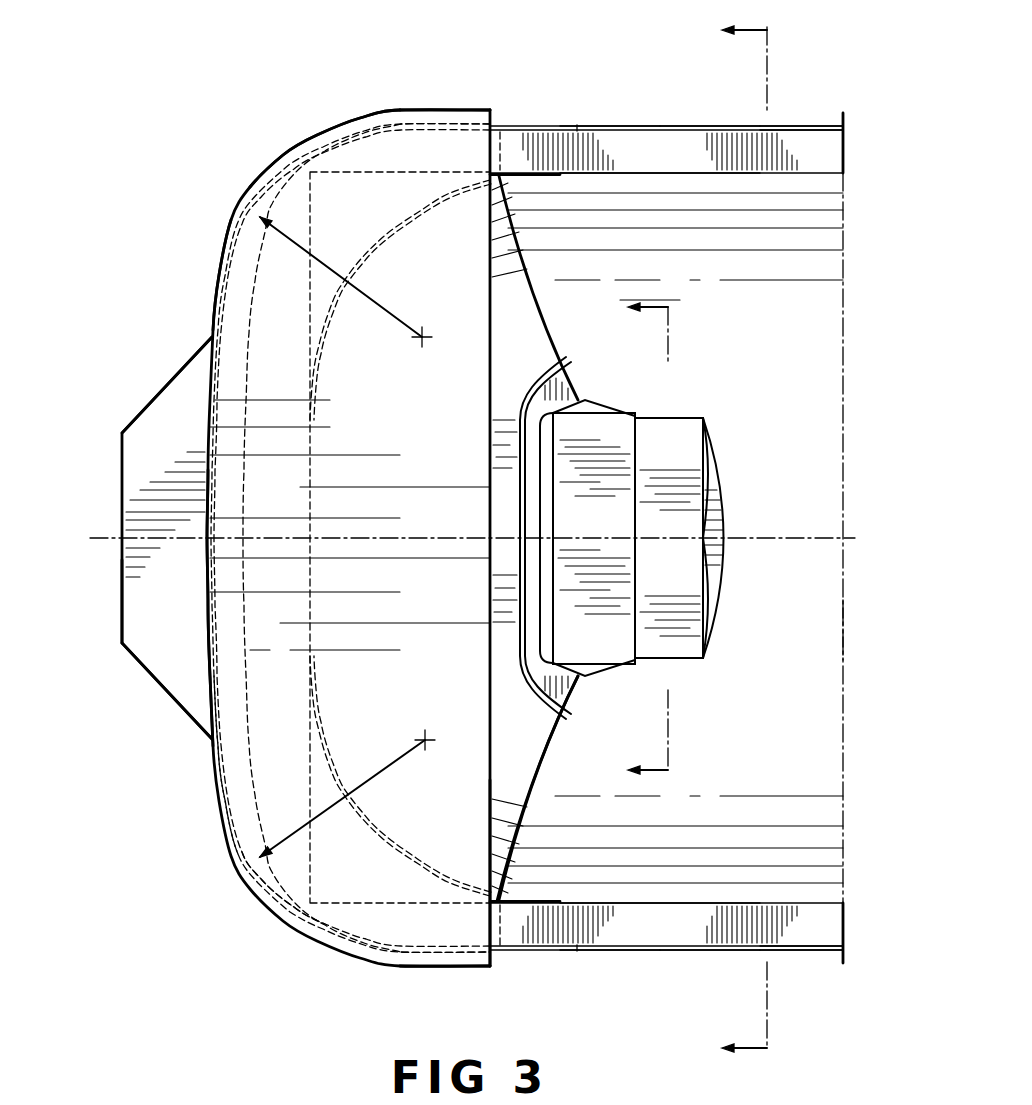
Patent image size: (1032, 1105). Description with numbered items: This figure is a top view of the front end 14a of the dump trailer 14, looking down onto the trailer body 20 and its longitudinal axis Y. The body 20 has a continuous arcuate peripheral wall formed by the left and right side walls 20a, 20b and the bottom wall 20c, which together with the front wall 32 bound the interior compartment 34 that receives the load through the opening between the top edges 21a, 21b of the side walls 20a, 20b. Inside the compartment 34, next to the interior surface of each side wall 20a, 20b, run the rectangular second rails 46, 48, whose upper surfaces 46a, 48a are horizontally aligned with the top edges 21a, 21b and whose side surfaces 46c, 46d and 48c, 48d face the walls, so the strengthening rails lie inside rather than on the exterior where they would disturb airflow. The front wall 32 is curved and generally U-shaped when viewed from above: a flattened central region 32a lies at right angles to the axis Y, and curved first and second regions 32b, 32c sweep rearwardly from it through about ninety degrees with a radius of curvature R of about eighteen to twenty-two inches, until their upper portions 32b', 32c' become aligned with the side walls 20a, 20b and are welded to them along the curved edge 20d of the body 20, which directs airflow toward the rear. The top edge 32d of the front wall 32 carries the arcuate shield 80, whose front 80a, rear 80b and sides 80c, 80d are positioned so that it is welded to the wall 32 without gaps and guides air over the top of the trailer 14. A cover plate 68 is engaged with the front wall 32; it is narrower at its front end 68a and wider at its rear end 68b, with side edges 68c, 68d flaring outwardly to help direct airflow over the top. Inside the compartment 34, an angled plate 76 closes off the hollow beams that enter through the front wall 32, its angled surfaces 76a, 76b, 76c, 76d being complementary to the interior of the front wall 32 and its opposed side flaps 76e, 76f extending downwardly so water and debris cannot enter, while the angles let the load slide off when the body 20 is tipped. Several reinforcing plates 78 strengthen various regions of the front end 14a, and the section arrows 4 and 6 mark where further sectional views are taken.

The dump trailer 14 is at (333, 90).
The front end 14a is at (205, 243).
The trailer body 20 is at (713, 842).
The left side wall 20a is at (617, 952).
The right side wall 20b is at (612, 126).
The bottom wall 20c is at (766, 640).
The curved edge 20d is at (528, 293).
The top edge 21a is at (683, 950).
The top edge 21b is at (683, 126).
The front wall 32 is at (223, 827).
The central region 32a is at (505, 517).
The curved first region 32b is at (254, 898).
The upper portion 32b' is at (491, 988).
The curved second region 32c is at (337, 538).
The upper portion 32c' is at (492, 85).
The top edge 32d is at (515, 127).
The interior compartment 34 is at (714, 303).
The second rail 46 is at (655, 948).
The upper surface 46a is at (818, 935).
The first side surface 46c is at (798, 948).
The second side surface 46d is at (650, 900).
The second rail 48 is at (658, 135).
The upper surface 48a is at (820, 143).
The first side surface 48c is at (647, 175).
The second side surface 48d is at (800, 130).
The cover plate 68 is at (137, 420).
The front end 68a is at (117, 623).
The rear end 68b is at (213, 497).
The side edge 68c is at (173, 690).
The side edge 68d is at (177, 373).
The angled plate 76 is at (692, 412).
The angled surface 76a is at (547, 623).
The angled surface 76b is at (573, 605).
The angled surface 76c is at (683, 577).
The angled surface 76d is at (713, 485).
The side flap 76e is at (587, 403).
The side flap 76f is at (585, 670).
The reinforcing plate 78 is at (368, 252).
The shield 80 is at (323, 943).
The front 80a is at (207, 680).
The rear 80b is at (492, 798).
The side 80c is at (433, 966).
The side 80d is at (445, 110).
The radius of curvature R is at (342, 537).
The longitudinal axis Y is at (778, 538).
The section line 4 is at (732, 539).
The section line 6 is at (638, 538).